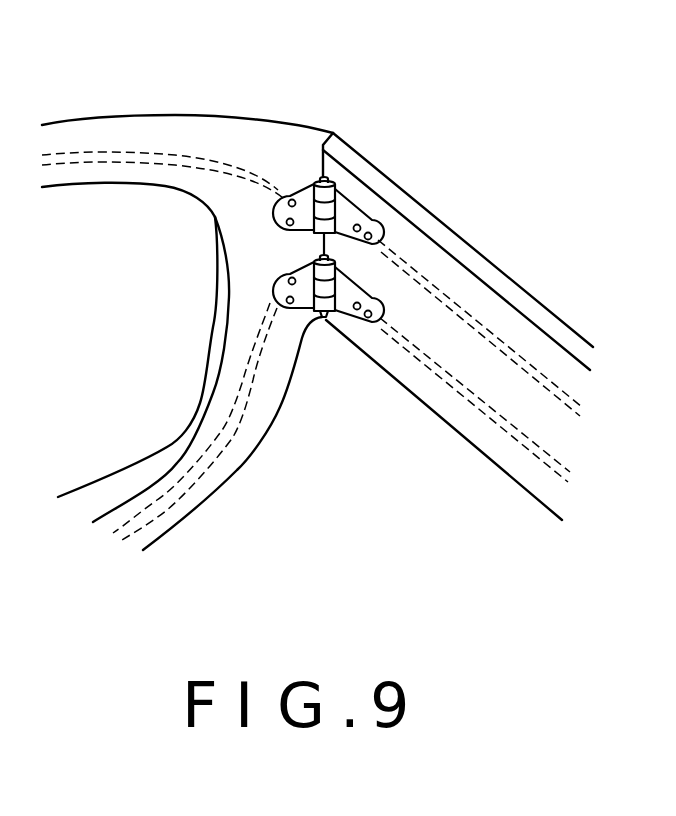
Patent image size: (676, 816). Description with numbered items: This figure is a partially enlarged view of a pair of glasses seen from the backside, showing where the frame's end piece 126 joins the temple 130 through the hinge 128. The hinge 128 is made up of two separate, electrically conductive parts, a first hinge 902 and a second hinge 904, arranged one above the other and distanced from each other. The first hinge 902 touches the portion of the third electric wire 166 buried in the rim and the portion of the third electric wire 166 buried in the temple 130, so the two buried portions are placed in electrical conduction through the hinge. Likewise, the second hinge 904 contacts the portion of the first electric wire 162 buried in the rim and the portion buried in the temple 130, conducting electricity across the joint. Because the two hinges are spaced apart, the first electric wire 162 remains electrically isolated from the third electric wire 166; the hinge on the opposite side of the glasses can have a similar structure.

The end piece 126 is at (297, 135).
The hinge 128 is at (565, 48).
The first hinge 902 is at (350, 213).
The second hinge 904 is at (350, 288).
The temple 130 is at (532, 307).
The first electric wire 162 is at (217, 445).
The third electric wire 166 is at (123, 157).